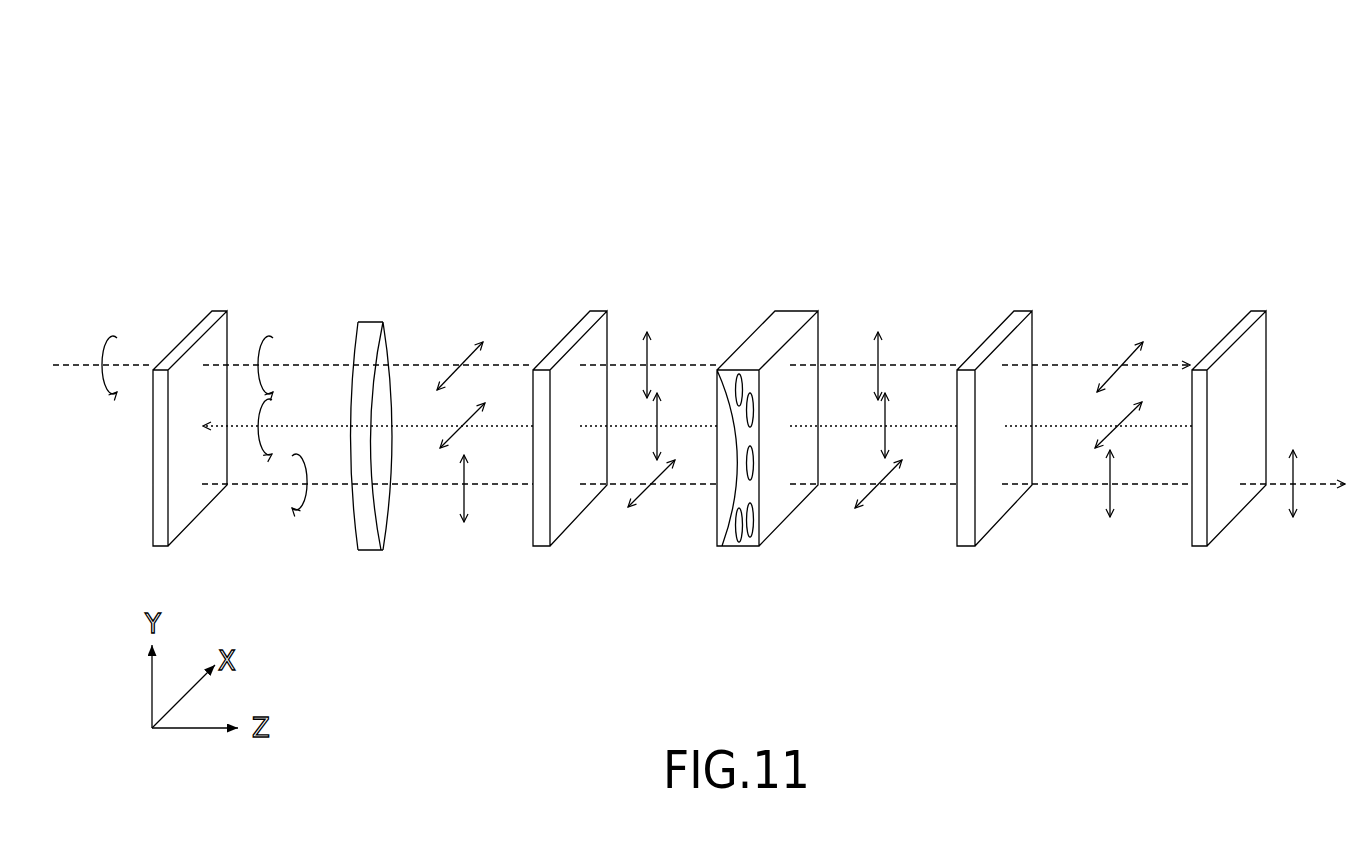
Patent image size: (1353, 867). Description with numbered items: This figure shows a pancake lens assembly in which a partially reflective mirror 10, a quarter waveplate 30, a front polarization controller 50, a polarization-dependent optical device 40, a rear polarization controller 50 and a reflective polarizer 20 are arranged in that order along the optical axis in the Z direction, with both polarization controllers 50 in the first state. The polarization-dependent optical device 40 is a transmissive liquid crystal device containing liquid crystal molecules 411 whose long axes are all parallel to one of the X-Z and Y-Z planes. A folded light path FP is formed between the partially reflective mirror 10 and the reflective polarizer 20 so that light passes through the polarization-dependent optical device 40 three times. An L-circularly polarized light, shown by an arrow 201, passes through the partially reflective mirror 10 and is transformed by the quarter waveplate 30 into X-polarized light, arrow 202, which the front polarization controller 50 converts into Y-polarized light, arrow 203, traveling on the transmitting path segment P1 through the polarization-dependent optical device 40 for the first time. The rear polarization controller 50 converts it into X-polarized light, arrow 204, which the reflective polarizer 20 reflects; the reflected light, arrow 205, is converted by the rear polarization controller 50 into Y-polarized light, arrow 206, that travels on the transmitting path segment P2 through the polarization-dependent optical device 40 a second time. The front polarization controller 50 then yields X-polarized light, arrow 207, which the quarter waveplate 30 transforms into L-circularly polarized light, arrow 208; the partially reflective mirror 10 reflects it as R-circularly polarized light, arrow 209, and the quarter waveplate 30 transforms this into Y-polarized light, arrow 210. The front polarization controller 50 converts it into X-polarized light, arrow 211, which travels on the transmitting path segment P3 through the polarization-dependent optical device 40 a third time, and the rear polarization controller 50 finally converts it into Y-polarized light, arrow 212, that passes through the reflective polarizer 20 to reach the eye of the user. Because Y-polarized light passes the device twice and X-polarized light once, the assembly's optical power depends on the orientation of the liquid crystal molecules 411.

The partially reflective mirror 10 is at (198, 310).
The quarter waveplate 30 is at (368, 308).
The polarization controller 50 is at (577, 312).
The polarization-dependent optical device 40 is at (774, 406).
The liquid crystal molecules 411 is at (750, 521).
The reflective polarizer 20 is at (1233, 310).
The arrow 201 is at (120, 347).
The arrow 202 is at (462, 357).
The arrow 203 is at (645, 352).
The arrow 204 is at (1128, 355).
The arrow 205 is at (1133, 410).
The arrow 206 is at (690, 410).
The arrow 207 is at (458, 430).
The arrow 208 is at (258, 422).
The arrow 209 is at (300, 508).
The arrow 210 is at (470, 490).
The arrow 211 is at (642, 497).
The arrow 212 is at (1107, 490).
The folded light path FP is at (327, 358).
The transmitting path segment P1 is at (697, 362).
The transmitting path segment P2 is at (842, 418).
The transmitting path segment P3 is at (695, 488).